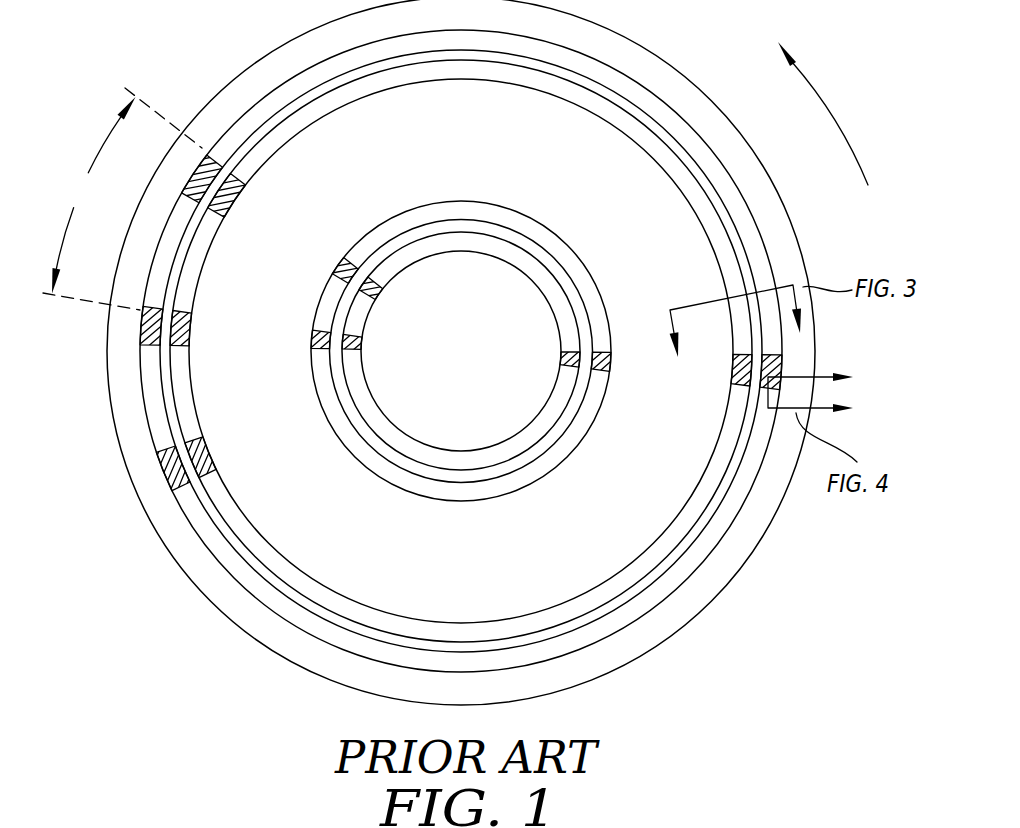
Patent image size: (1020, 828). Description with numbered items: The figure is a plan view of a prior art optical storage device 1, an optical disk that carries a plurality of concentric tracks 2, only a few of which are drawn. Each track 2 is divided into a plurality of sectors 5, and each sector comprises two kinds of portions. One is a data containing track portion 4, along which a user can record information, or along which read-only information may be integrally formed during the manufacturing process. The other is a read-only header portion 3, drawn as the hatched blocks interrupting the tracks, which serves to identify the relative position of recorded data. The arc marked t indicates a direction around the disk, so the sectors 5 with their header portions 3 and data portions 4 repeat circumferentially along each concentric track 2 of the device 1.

The optical storage device 1 is at (140, 643).
The concentric tracks 2 is at (373, 460).
The read-only header portion 3 is at (150, 335).
The data containing track portion 4 is at (183, 282).
The sectors 5 is at (122, 199).
The circumferential direction t is at (827, 107).